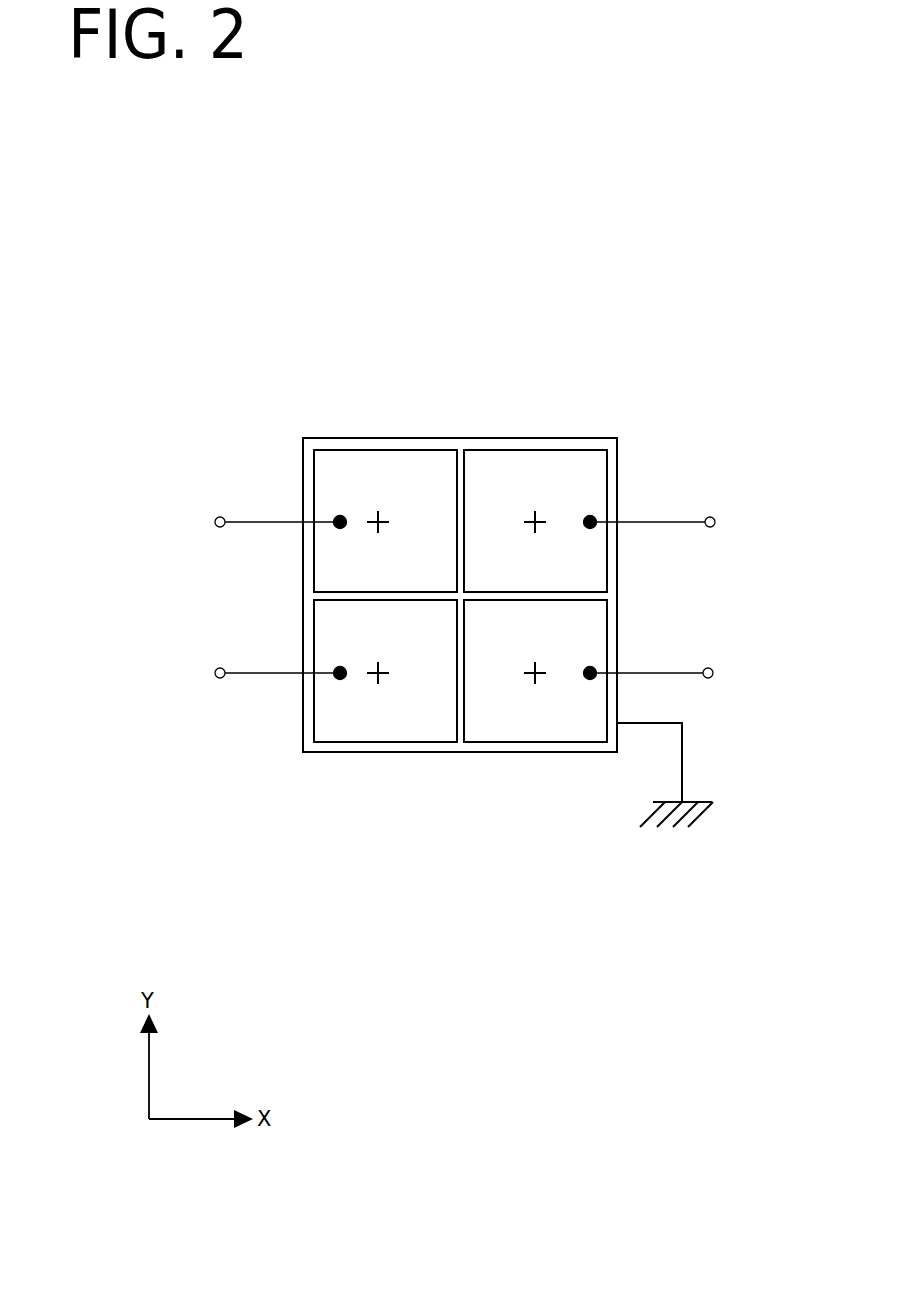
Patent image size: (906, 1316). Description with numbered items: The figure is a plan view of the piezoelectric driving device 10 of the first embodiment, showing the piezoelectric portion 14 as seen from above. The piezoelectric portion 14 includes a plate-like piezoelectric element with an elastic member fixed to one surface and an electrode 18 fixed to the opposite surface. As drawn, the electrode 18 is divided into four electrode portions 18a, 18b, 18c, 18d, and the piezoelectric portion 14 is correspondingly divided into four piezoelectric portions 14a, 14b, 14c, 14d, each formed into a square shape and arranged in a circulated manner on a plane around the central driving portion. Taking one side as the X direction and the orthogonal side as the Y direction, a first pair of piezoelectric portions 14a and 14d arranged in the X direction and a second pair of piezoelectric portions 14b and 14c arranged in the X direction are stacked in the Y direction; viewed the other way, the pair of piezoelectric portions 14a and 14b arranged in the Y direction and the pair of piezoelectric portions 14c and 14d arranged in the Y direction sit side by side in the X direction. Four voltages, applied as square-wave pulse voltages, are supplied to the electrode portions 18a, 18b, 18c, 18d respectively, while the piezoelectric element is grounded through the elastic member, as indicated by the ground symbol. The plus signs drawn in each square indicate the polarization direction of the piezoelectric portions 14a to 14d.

The piezoelectric driving device 10 is at (614, 262).
The piezoelectric portion 14 is at (459, 447).
The piezoelectric portion 14a is at (625, 479).
The piezoelectric portion 14b is at (594, 760).
The piezoelectric portion 14c is at (404, 760).
The piezoelectric portion 14d is at (421, 431).
The electrode 18 is at (593, 431).
The electrode portion 18a is at (525, 450).
The electrode portion 18b is at (482, 742).
The electrode portion 18c is at (344, 742).
The electrode portion 18d is at (342, 450).